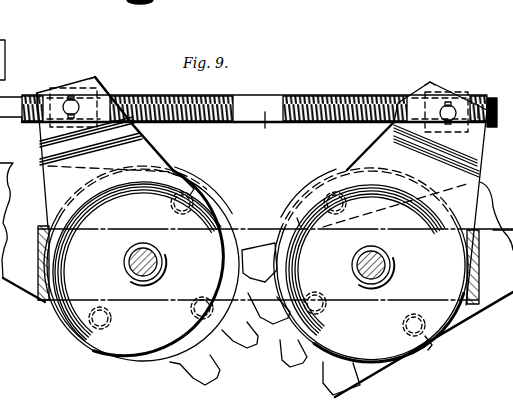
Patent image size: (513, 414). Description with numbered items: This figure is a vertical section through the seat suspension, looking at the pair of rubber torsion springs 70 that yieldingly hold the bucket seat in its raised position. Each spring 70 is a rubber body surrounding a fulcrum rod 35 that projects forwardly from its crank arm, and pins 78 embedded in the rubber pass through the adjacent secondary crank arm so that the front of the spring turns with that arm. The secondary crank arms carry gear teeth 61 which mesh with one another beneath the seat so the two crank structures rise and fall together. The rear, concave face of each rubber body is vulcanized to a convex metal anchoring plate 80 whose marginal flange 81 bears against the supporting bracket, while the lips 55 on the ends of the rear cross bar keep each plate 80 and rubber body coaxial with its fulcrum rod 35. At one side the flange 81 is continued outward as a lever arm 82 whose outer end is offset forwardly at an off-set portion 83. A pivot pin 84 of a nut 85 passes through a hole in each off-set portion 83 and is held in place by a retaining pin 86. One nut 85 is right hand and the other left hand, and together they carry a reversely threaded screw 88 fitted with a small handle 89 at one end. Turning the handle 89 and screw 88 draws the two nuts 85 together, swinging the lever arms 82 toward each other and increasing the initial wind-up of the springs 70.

The fulcrum rod 35 is at (152, 257).
The lip 55 is at (38, 263).
The gear teeth 61 is at (288, 356).
The rubber torsion spring 70 is at (97, 350).
The pin 78 is at (190, 188).
The convex metal anchoring plate 80 is at (220, 209).
The marginal flange 81 is at (297, 216).
The lever arm 82 is at (144, 152).
The off-set portion 83 is at (96, 78).
The pivot pin 84 is at (78, 127).
The nut 85 is at (58, 88).
The retaining pin 86 is at (72, 98).
The screw 88 is at (248, 123).
The handle 89 is at (6, 56).